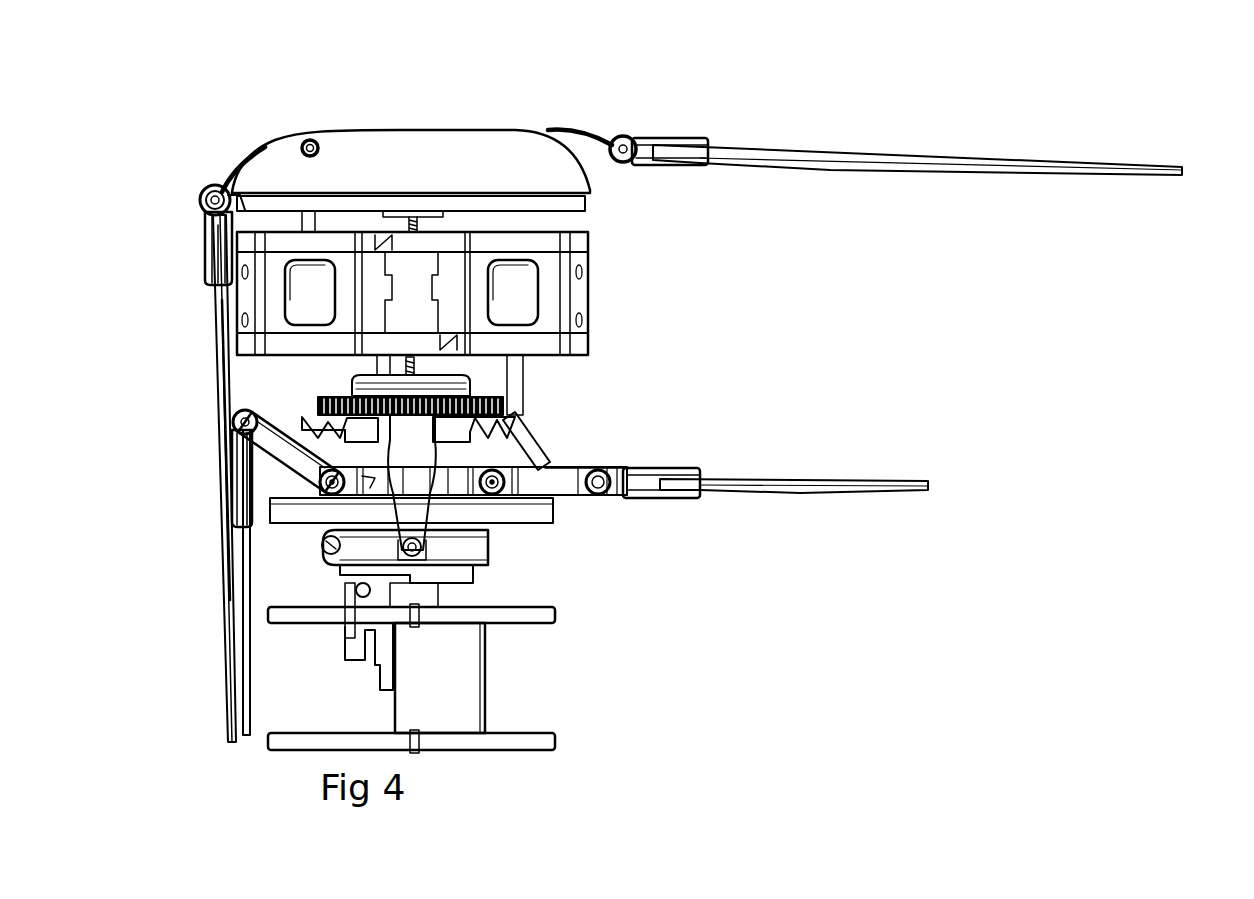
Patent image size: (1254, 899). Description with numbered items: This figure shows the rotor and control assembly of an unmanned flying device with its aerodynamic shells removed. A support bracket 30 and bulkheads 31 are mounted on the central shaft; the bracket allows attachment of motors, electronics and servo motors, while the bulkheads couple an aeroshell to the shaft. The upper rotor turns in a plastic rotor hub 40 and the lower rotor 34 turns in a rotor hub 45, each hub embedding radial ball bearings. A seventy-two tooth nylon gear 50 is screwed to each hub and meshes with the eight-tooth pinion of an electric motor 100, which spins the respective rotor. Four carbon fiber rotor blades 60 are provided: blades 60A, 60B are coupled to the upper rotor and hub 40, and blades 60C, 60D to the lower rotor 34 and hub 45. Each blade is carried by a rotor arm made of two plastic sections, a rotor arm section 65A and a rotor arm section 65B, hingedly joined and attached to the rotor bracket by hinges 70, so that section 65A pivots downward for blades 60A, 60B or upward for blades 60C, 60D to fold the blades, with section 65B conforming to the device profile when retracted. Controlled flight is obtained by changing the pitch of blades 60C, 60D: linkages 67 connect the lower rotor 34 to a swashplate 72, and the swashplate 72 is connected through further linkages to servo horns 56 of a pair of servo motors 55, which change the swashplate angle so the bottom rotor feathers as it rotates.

The support bracket 30 is at (545, 343).
The bulkheads 31 is at (558, 615).
The rotor 34 is at (376, 478).
The rotor hub 40 is at (428, 142).
The rotor hub 45 is at (465, 457).
The nylon gear 50 is at (513, 403).
The servo motors 55 is at (465, 685).
The servo horns 56 is at (337, 635).
The rotor blade 60 is at (653, 480).
The rotor blade 60A is at (840, 157).
The rotor blade 60B is at (220, 385).
The rotor blade 60C is at (813, 478).
The rotor blade 60D is at (247, 705).
The rotor arm section 65A is at (232, 180).
The rotor arm section 65B is at (205, 248).
The linkages 67 is at (417, 515).
The hinges 70 is at (220, 187).
The swashplate 72 is at (475, 573).
The electric motor 100 is at (523, 291).